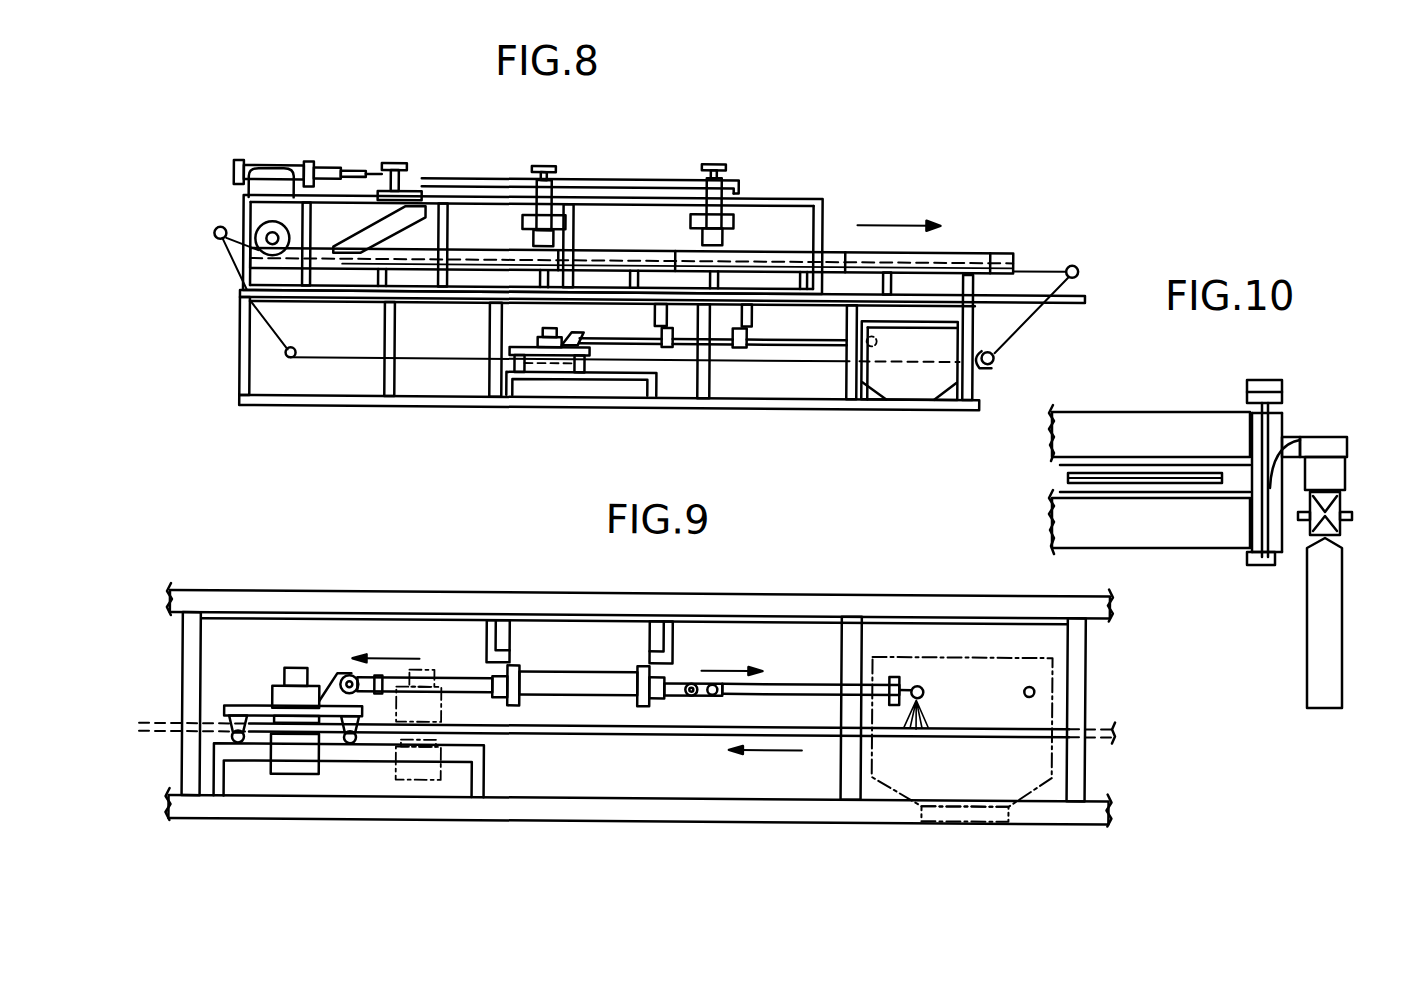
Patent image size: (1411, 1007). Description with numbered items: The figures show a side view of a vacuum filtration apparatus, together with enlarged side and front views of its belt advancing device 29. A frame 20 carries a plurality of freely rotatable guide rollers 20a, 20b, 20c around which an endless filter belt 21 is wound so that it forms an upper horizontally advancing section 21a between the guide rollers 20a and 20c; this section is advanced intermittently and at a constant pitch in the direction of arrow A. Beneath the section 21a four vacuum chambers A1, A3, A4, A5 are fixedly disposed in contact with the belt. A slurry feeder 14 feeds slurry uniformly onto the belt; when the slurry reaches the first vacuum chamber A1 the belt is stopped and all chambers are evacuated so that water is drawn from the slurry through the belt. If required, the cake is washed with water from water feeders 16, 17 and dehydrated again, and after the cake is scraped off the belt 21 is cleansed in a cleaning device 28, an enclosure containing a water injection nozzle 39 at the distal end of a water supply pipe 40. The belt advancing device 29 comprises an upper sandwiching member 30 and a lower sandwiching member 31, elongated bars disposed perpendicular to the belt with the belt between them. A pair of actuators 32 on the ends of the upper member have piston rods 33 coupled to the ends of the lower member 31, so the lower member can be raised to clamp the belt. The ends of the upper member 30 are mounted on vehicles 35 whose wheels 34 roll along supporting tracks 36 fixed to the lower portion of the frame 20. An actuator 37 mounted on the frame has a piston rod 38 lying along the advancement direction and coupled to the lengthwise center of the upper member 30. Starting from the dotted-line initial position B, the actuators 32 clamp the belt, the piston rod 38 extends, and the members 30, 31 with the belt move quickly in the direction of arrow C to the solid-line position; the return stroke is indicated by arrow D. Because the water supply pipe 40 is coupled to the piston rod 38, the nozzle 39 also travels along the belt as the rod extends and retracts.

In FIG. 8, the slurry feeder 14 is at (360, 218).
In FIG. 8, the water feeder 16 is at (528, 208).
In FIG. 8, the water feeder 17 is at (693, 212).
In FIG. 8, the frame 20 is at (447, 397).
In FIG. 9, the frame 20 is at (693, 605).
In FIG. 8, the guide roller 20a is at (1072, 260).
In FIG. 8, the guide roller 20b is at (216, 228).
In FIG. 8, the guide roller 20c is at (262, 246).
In FIG. 8, the endless filter belt 21 is at (337, 360).
In FIG. 9, the endless filter belt 21 is at (612, 733).
In FIG. 10, the endless filter belt 21 is at (1065, 478).
In FIG. 8, the upper horizontally advancing section 21a is at (1017, 258).
In FIG. 8, the cleaning device 28 is at (908, 378).
In FIG. 9, the cleaning device 28 is at (983, 652).
In FIG. 8, the belt advancing device 29 is at (618, 383).
In FIG. 9, the belt advancing device 29 is at (399, 580).
In FIG. 10, the belt advancing device 29 is at (1187, 565).
In FIG. 9, the upper sandwiching member 30 is at (274, 688).
In FIG. 10, the upper sandwiching member 30 is at (1165, 420).
In FIG. 9, the lower sandwiching member 31 is at (290, 774).
In FIG. 10, the lower sandwiching member 31 is at (1155, 548).
In FIG. 9, the actuator 32 is at (300, 667).
In FIG. 10, the actuator 32 is at (1262, 380).
In FIG. 10, the piston rod 33 is at (1297, 438).
In FIG. 8, the wheel 34 is at (297, 246).
In FIG. 9, the wheel 34 is at (232, 732).
In FIG. 10, the wheel 34 is at (1342, 530).
In FIG. 9, the vehicle 35 is at (232, 705).
In FIG. 10, the vehicle 35 is at (1340, 447).
In FIG. 9, the supporting track 36 is at (357, 761).
In FIG. 10, the supporting track 36 is at (1335, 632).
In FIG. 9, the actuator 37 is at (585, 669).
In FIG. 9, the piston rod 38 is at (463, 675).
In FIG. 9, the water injection nozzle 39 is at (917, 681).
In FIG. 9, the water supply pipe 40 is at (805, 680).
In FIG. 8, the arrow A is at (898, 213).
In FIG. 9, the arrow A is at (764, 765).
In FIG. 8, the first vacuum chamber A1 is at (462, 247).
In FIG. 8, the vacuum chamber A3 is at (600, 257).
In FIG. 8, the vacuum chamber A4 is at (770, 262).
In FIG. 8, the vacuum chamber A5 is at (893, 262).
In FIG. 9, the initial position B is at (413, 779).
In FIG. 9, the arrow C is at (385, 647).
In FIG. 9, the direction D is at (731, 659).